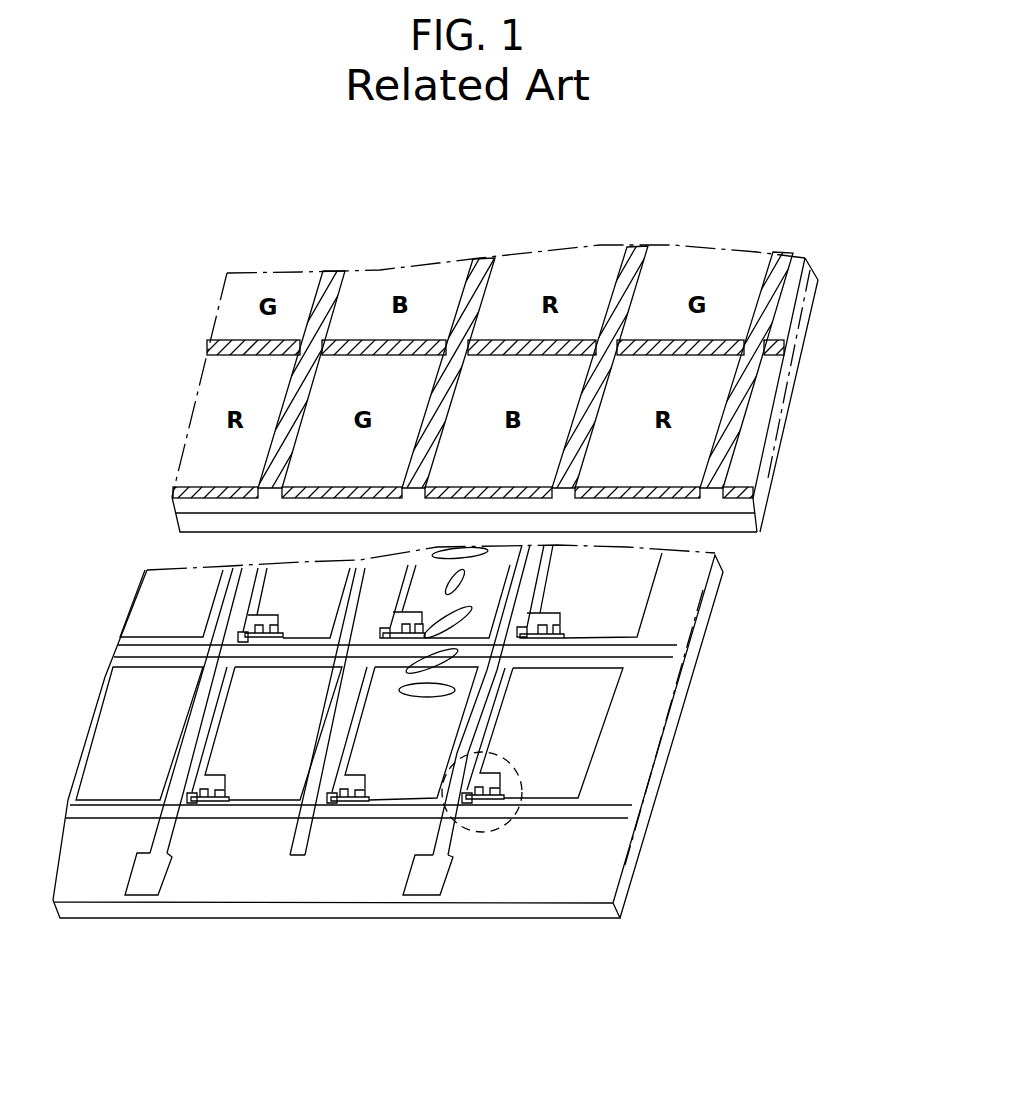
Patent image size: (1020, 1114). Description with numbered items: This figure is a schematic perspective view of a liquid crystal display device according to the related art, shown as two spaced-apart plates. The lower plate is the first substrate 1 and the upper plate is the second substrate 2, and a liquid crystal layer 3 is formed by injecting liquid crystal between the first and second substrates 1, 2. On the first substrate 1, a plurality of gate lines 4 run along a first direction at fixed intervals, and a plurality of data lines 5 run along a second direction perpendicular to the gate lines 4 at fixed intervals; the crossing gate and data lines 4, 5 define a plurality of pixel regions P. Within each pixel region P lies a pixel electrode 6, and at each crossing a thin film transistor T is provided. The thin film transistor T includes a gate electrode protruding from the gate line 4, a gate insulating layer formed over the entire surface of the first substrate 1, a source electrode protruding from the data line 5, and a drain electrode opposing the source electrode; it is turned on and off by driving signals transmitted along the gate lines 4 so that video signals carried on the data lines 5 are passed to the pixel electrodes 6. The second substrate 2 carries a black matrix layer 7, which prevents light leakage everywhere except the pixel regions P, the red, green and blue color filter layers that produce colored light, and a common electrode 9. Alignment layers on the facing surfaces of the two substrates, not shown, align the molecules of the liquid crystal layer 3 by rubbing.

The first substrate 1 is at (578, 912).
The second substrate 2 is at (738, 507).
The liquid crystal layer 3 is at (445, 625).
The gate lines 4 is at (592, 815).
The data lines 5 is at (435, 842).
The pixel electrodes 6 is at (598, 747).
The black matrix layer 7 is at (783, 348).
The common electrode 9 is at (742, 523).
The pixel regions P is at (642, 700).
The thin film transistors T is at (483, 838).